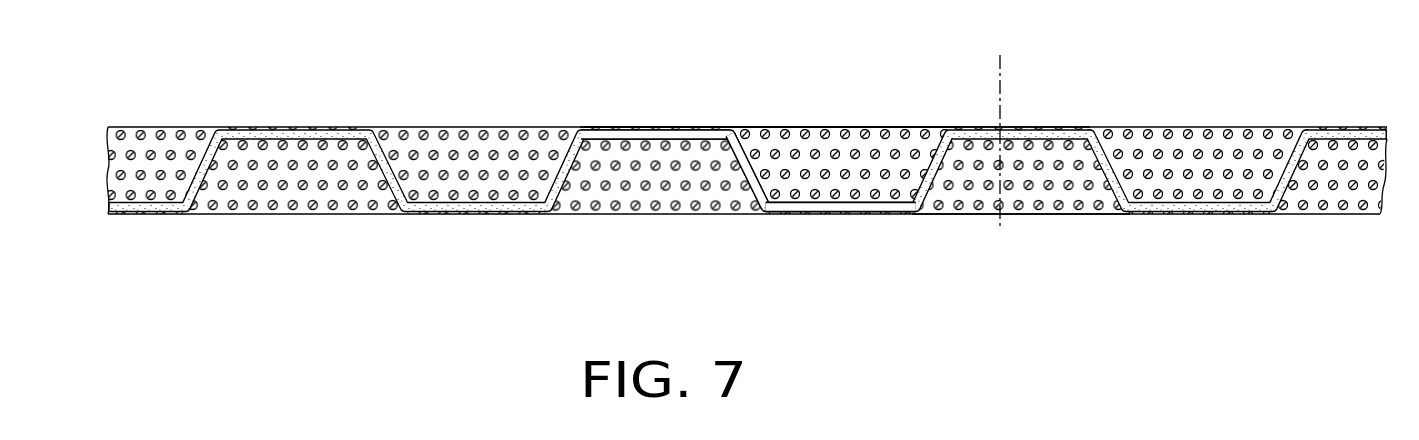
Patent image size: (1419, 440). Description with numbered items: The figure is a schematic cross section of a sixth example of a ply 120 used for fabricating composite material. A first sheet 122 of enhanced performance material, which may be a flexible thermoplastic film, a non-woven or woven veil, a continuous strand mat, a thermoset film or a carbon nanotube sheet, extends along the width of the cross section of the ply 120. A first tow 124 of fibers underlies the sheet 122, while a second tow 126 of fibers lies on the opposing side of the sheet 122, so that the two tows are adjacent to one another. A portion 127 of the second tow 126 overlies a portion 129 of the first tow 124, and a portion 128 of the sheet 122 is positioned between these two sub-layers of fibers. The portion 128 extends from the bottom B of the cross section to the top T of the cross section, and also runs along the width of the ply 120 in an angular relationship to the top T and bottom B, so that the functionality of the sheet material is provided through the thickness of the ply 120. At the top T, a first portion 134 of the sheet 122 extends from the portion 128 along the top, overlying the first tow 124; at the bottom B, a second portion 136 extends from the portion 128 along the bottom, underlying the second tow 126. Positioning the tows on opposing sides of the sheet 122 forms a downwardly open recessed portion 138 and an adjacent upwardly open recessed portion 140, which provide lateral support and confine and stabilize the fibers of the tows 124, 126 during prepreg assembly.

The ply 120 is at (1128, 94).
The first sheet of enhanced performance material 122 is at (283, 137).
The first tow of fibers 124 is at (673, 196).
The second tow of fibers 126 is at (818, 153).
The portion of second tow 127 is at (747, 115).
The portion of first sheet 128 is at (749, 177).
The portion of first tow 129 is at (737, 189).
The first portion of sheet 134 is at (644, 138).
The second portion of first sheet 136 is at (865, 209).
The recessed portion 138 is at (635, 172).
The recessed portion 140 is at (860, 157).
The top T is at (1038, 114).
The bottom B is at (1047, 229).